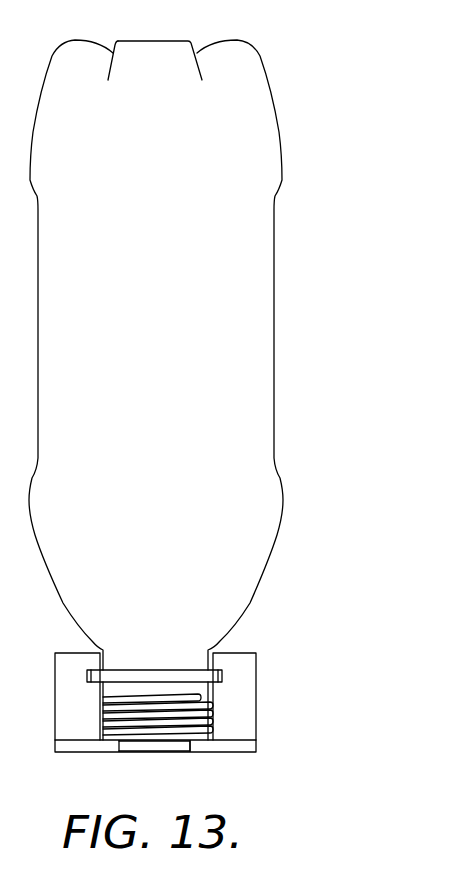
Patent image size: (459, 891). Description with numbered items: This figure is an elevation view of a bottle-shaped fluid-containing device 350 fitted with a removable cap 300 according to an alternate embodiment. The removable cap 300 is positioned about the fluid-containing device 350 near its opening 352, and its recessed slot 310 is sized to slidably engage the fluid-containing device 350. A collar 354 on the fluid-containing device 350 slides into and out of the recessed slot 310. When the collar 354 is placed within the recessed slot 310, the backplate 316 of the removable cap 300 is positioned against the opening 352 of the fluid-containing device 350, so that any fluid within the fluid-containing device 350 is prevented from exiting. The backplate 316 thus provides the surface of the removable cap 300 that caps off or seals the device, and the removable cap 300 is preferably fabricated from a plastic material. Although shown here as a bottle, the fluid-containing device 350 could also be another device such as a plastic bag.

The removable cap 300 is at (305, 724).
The recessed slot 310 is at (213, 693).
The backplate 316 is at (256, 745).
The fluid-containing device 350 is at (274, 408).
The opening 352 is at (153, 741).
The collar 354 is at (88, 675).